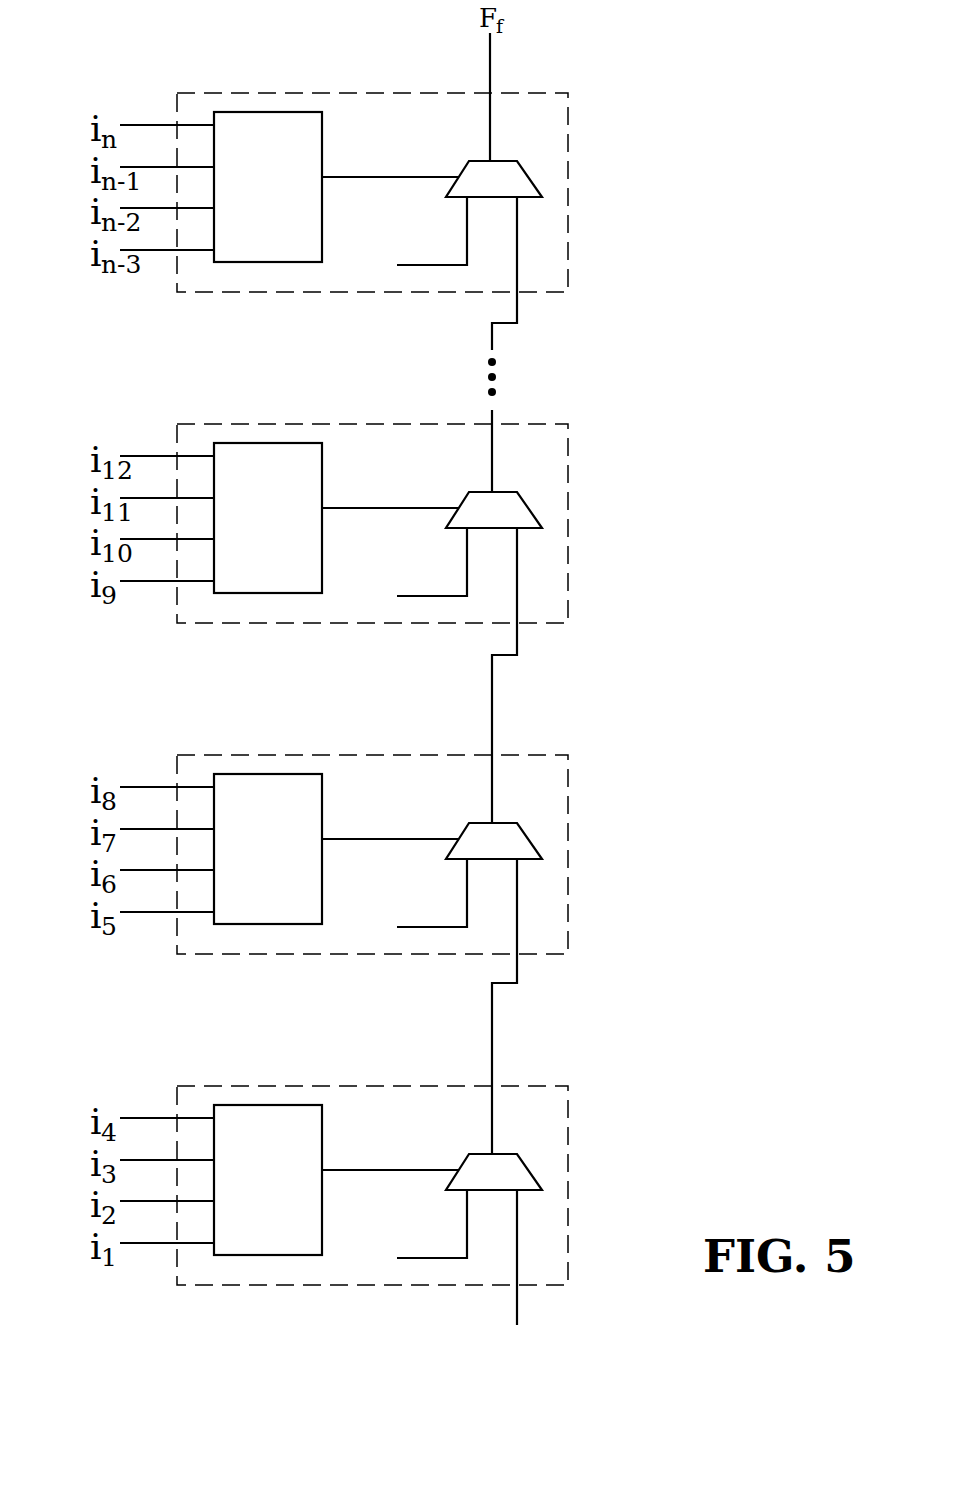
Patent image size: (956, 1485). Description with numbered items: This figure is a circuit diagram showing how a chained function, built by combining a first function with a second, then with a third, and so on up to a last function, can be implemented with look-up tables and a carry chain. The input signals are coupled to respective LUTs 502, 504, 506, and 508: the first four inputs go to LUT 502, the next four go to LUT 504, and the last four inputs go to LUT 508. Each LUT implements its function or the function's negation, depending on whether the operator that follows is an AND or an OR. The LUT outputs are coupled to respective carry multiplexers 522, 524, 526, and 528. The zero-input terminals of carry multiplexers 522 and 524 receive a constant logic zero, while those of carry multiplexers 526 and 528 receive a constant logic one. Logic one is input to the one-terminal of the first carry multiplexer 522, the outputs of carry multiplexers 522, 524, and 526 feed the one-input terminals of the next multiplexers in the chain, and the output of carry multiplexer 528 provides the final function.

The LUT 502 is at (296, 1180).
The LUT 504 is at (296, 849).
The LUT 506 is at (296, 518).
The LUT 508 is at (323, 162).
The carry multiplexer 522 is at (505, 1160).
The carry multiplexer 524 is at (505, 829).
The carry multiplexer 526 is at (505, 498).
The carry multiplexer 528 is at (553, 160).